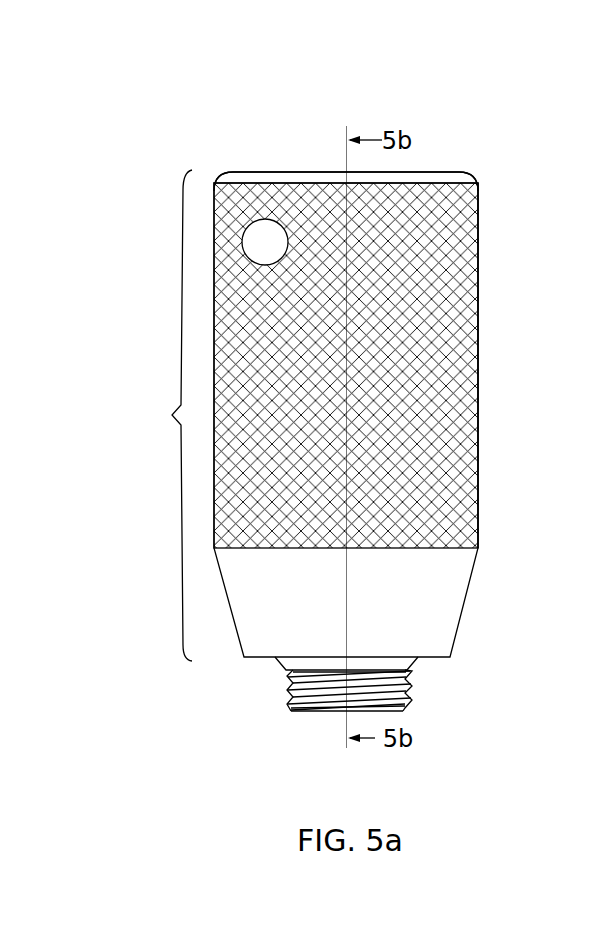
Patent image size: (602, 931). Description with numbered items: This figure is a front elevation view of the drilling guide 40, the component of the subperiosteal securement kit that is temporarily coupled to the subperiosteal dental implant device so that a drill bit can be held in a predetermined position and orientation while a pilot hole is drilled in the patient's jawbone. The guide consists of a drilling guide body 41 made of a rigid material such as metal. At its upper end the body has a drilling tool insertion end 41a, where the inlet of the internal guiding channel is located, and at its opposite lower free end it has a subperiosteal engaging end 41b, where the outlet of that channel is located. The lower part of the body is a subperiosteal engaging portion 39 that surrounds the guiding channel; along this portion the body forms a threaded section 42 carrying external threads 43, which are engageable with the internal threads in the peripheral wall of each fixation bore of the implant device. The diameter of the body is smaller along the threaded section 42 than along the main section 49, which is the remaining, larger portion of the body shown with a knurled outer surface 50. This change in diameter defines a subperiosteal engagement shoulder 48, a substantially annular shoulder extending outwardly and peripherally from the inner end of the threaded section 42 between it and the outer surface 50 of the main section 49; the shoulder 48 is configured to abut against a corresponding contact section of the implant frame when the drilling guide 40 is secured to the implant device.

The drilling guide 40 is at (507, 227).
The drilling guide body 41 is at (465, 333).
The drilling tool insertion end 41a is at (452, 172).
The subperiosteal engaging end 41b is at (299, 713).
The threaded section 42 is at (420, 690).
The subperiosteal engaging portion 39 is at (412, 682).
The external threads 43 is at (402, 703).
The subperiosteal engagement shoulder 48 is at (256, 674).
The main section 49 is at (164, 415).
The outer surface 50 is at (478, 413).